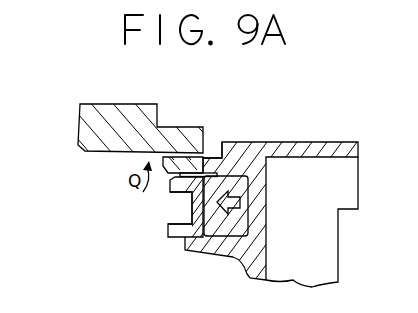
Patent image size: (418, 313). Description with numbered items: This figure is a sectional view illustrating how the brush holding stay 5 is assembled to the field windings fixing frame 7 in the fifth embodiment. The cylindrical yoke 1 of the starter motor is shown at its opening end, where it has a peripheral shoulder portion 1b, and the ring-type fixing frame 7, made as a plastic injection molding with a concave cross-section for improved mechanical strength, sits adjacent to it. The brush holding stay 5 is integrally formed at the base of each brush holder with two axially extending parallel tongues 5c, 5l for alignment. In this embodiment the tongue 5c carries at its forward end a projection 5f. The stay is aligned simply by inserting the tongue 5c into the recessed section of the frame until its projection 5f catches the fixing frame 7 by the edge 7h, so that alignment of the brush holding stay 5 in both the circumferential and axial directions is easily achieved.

The cylindrical yoke 1 is at (104, 114).
The peripheral shoulder portion 1b is at (202, 157).
The brush holding stay 5 is at (281, 147).
The projection 5f is at (180, 172).
The tongue 5c is at (208, 167).
The tongue 5l is at (214, 247).
The fixing frame 7 is at (170, 232).
The edge 7h is at (170, 192).